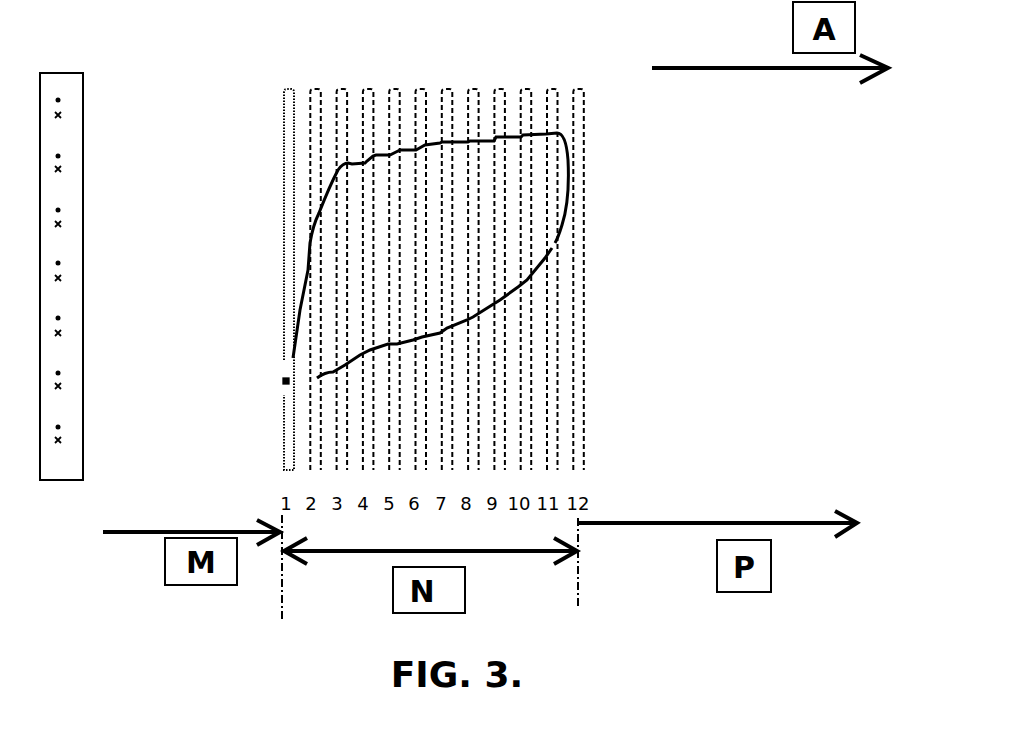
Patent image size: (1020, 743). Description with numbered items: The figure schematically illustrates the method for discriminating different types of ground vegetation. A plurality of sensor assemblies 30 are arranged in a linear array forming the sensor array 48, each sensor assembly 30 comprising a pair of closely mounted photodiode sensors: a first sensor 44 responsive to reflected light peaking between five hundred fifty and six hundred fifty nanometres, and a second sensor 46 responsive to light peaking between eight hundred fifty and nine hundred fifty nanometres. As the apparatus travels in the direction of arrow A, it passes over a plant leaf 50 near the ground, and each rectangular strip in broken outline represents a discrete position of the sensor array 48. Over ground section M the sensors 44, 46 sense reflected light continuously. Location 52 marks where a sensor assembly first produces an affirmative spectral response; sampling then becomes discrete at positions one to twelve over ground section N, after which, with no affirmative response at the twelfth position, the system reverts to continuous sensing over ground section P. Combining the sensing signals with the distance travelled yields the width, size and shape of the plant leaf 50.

The sensor array 48 is at (85, 82).
The sensor assembly 30 is at (126, 271).
The second sensor 46 is at (74, 322).
The first sensor 44 is at (74, 339).
The location 52 is at (277, 383).
The plant leaf 50 is at (563, 225).